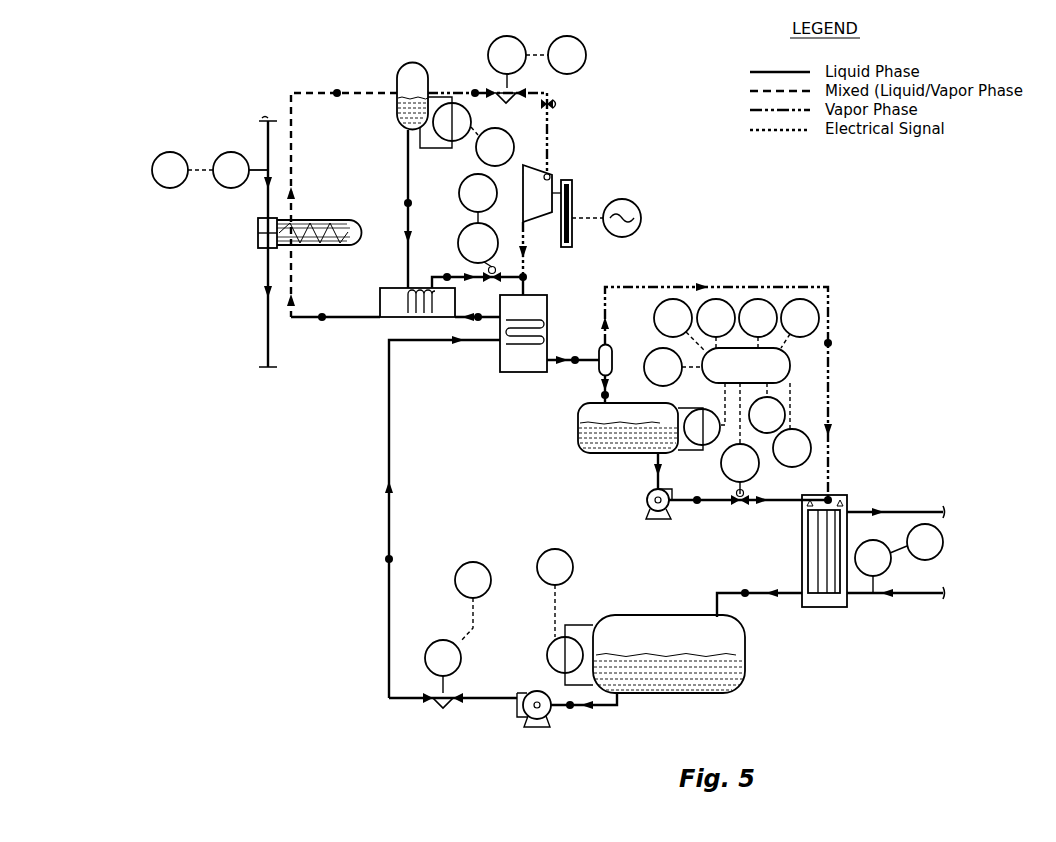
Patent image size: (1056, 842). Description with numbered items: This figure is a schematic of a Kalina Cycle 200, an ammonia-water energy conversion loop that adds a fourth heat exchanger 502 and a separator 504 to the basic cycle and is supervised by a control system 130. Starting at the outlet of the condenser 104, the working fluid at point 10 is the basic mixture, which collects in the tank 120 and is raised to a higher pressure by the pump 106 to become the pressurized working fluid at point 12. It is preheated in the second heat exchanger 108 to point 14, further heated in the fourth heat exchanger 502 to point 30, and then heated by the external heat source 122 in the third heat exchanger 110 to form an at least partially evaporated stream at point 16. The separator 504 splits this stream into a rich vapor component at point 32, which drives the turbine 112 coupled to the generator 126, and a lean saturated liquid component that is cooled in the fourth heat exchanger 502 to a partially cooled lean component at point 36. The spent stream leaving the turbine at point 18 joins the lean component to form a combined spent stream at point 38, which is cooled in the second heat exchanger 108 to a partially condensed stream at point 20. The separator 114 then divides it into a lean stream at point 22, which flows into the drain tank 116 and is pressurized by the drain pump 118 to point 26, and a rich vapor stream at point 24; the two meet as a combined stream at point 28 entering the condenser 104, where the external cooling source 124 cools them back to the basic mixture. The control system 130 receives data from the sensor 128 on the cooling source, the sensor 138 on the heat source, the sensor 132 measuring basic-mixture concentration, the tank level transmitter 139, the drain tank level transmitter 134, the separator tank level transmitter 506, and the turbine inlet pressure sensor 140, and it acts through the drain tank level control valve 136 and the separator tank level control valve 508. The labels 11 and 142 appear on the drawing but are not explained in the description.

The Kalina Cycle 200 is at (848, 730).
The separator 504 is at (405, 62).
The first separator tank level transmitter 506 is at (466, 138).
The point 16 is at (342, 203).
The external heat source 122 is at (265, 133).
The sensor 138 is at (210, 170).
The third heat exchanger 110 is at (330, 221).
The point 30 is at (335, 307).
The fourth heat exchanger 502 is at (392, 311).
The point 14 is at (477, 307).
The point 36 is at (477, 270).
The separator tank level control valve 508 is at (478, 220).
The point 32 is at (487, 120).
The turbine inlet pressure sensor 140 is at (537, 55).
The valve 142 is at (556, 100).
The turbine 112 is at (549, 175).
The generator 126 is at (575, 190).
The point 18 is at (512, 249).
The point 38 is at (534, 276).
The second heat exchanger 108 is at (547, 295).
The point 12 is at (442, 517).
The point 20 is at (573, 349).
The separator 114 is at (611, 347).
The point 24 is at (729, 391).
The point 22 is at (616, 389).
The drain tank 116 is at (578, 442).
The drain tank level transmitter 134 is at (699, 429).
The control system 130 is at (731, 383).
The drain tank level control valve 136 is at (740, 474).
The drain pump 118 is at (647, 503).
The point 26 is at (748, 510).
The point 28 is at (816, 491).
The condenser 104 is at (847, 495).
The first sensor 128 is at (927, 558).
The external cooling source 124 is at (867, 598).
The point 10 is at (759, 605).
The tank 120 is at (745, 667).
The tank level transmitter 139 is at (581, 617).
The line 11 is at (584, 712).
The pump 106 is at (524, 713).
The sensor 132 is at (459, 615).